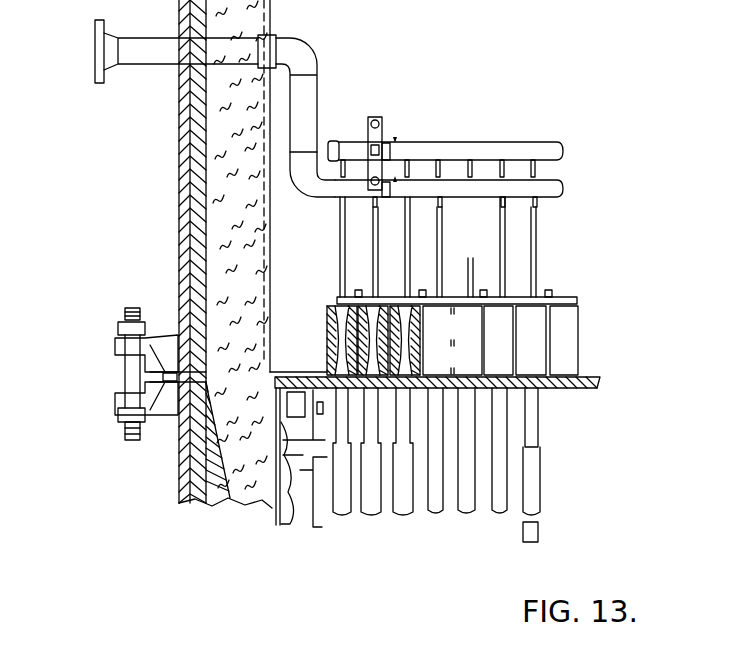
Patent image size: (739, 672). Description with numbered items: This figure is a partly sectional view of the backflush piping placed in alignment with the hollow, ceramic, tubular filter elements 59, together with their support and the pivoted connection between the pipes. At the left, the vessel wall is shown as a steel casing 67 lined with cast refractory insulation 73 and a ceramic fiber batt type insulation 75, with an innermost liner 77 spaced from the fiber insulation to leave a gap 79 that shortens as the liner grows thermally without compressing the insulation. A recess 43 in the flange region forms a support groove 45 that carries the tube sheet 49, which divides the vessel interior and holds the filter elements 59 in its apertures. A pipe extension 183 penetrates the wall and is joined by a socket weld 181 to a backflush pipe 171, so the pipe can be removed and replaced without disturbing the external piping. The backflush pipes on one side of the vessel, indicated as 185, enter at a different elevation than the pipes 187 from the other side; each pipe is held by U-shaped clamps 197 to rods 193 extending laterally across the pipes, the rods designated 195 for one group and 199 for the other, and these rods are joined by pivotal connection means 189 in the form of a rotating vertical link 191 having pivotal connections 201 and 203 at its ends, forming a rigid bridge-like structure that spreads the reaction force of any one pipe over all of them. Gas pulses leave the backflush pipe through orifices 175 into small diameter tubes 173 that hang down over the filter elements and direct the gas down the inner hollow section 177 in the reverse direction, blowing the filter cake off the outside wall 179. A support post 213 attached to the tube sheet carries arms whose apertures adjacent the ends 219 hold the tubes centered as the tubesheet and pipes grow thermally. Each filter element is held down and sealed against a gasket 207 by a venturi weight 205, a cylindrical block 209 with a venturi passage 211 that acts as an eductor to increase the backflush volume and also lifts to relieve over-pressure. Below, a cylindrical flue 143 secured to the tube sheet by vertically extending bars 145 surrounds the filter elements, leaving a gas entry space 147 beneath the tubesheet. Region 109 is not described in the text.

The recess 43 is at (152, 400).
The support groove 45 is at (172, 318).
The tube sheet 49 is at (158, 360).
The hollow, ceramic, tubular filter element 59 is at (540, 475).
The steel casing 67 is at (178, 122).
The cast refractory insulation 73 is at (195, 172).
The ceramic fiber batt type insulation 75 is at (225, 222).
The innermost liner 77 is at (270, 328).
The gap 79 is at (268, 298).
The refractory bulge 109 is at (168, 415).
The cylindrical flue 143 is at (313, 523).
The vertically extending bars 145 is at (278, 432).
The gas entry space 147 is at (287, 527).
The backflush pipe 171 is at (305, 108).
The small diameter tubes 173 is at (373, 254).
The orifices 175 is at (337, 206).
The filter element inner hollow section 177 is at (535, 430).
The outside wall 179 is at (540, 501).
The socket weld 181 is at (277, 38).
The pipe extension 183 is at (160, 52).
The backflush pipes 185 is at (562, 199).
The backflush pipes 187 is at (518, 140).
The pivotal connection means 189 is at (391, 99).
The vertical link 191 is at (368, 133).
The rods 193 is at (396, 118).
The supporting structural rods 195 is at (388, 175).
The U-shaped clamps 197 is at (392, 133).
The supporting structural rods 199 is at (385, 137).
The pivotal connection 201 is at (372, 117).
The pivotal connection 203 is at (345, 236).
The venturi weight 205 is at (325, 331).
The gasket 207 is at (313, 376).
The cylindrical block 209 is at (420, 355).
The venturi passage 211 is at (420, 333).
The support post 213 is at (423, 290).
The ends 219 is at (383, 291).